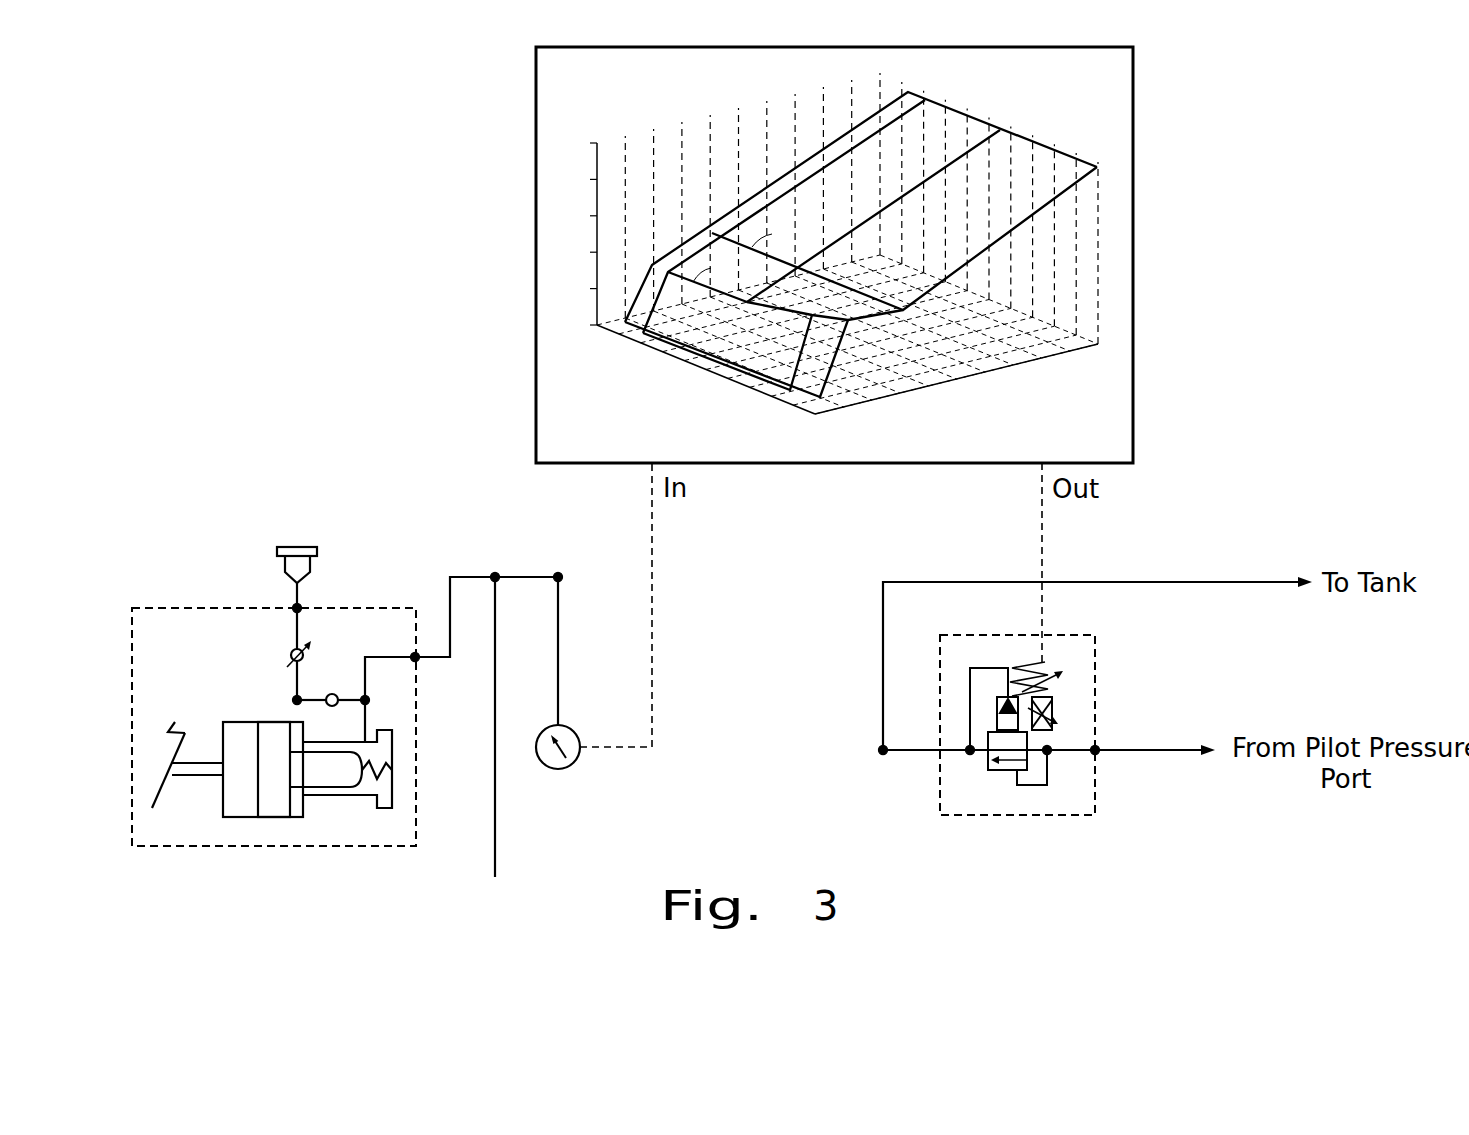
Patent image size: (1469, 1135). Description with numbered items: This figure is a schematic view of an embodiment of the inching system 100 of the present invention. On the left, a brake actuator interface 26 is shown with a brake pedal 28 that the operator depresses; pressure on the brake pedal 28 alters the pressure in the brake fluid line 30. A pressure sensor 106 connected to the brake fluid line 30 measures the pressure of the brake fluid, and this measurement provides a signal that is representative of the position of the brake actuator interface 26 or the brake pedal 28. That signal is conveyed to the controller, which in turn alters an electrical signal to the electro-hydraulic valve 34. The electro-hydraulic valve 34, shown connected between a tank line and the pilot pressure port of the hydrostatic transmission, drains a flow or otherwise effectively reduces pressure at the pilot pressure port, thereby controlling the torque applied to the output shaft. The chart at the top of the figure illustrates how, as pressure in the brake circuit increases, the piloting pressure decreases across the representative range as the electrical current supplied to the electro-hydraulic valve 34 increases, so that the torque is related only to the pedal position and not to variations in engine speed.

The inching system 100 is at (1222, 145).
The brake actuator interface 26 is at (213, 847).
The brake pedal 28 is at (178, 750).
The brake fluid line 30 is at (528, 577).
The pressure sensor 106 is at (573, 762).
The electro-hydraulic (EH) valve 34 is at (1112, 683).